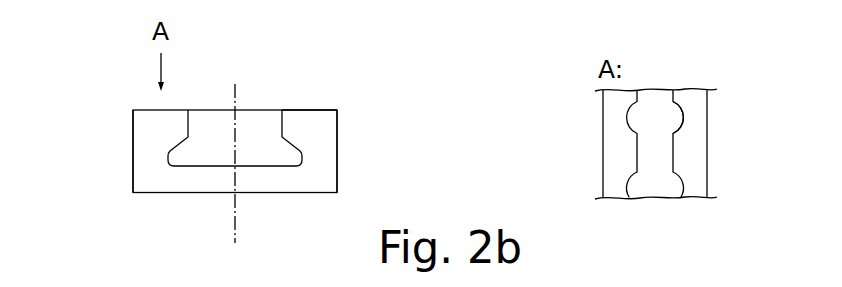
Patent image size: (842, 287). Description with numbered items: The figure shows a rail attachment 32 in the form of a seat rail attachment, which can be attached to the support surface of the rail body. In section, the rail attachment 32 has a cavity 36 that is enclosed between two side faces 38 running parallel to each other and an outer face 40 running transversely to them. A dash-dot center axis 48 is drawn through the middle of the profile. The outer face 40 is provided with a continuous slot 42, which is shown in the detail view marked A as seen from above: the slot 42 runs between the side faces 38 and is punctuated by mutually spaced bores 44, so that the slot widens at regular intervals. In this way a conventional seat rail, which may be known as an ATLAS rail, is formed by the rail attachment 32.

The rail attachment 32 is at (328, 167).
The cavity 36 is at (180, 154).
The side faces 38 is at (137, 157).
The outer face 40 is at (302, 99).
The continuous slot 42 is at (653, 183).
The bores 44 is at (677, 114).
The center axis 48 is at (217, 111).